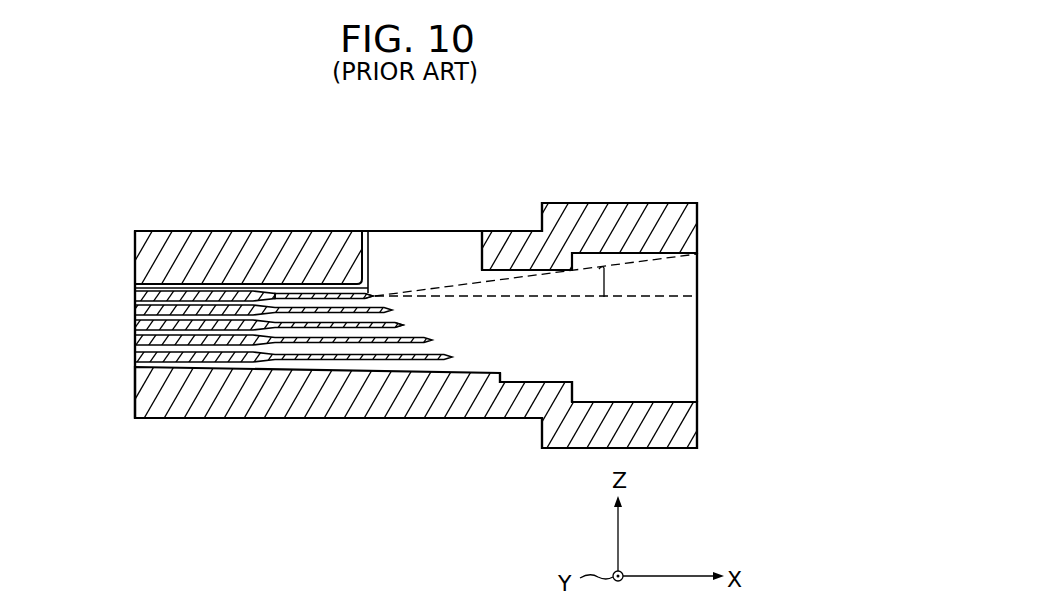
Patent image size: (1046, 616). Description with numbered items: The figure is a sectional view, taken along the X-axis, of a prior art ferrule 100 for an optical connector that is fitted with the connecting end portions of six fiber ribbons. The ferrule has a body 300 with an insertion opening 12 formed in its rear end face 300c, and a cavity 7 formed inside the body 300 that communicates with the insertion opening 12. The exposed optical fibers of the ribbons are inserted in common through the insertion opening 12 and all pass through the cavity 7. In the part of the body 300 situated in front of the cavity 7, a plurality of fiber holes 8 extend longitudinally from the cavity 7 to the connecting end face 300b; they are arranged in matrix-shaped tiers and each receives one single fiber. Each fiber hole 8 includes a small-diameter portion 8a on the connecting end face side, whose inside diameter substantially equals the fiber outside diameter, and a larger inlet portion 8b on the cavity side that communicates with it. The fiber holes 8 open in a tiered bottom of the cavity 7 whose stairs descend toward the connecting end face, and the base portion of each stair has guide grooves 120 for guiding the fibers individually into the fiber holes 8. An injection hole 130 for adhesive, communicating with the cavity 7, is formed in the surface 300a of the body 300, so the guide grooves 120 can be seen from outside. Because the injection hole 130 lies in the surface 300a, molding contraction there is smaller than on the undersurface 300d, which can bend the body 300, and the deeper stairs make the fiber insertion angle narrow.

The ferrule 100 is at (626, 160).
The body 300 is at (164, 240).
The surface 300a is at (506, 234).
The connecting end face 300b is at (135, 257).
The rear end face 300c is at (697, 423).
The undersurface 300d is at (286, 420).
The injection hole 130 is at (432, 240).
The cavity 7 is at (530, 337).
The insertion opening 12 is at (697, 284).
The fiber holes 8 is at (298, 262).
The small-diameter portion 8a is at (204, 294).
The inlet portion 8b is at (310, 291).
The guide grooves 120 is at (371, 293).